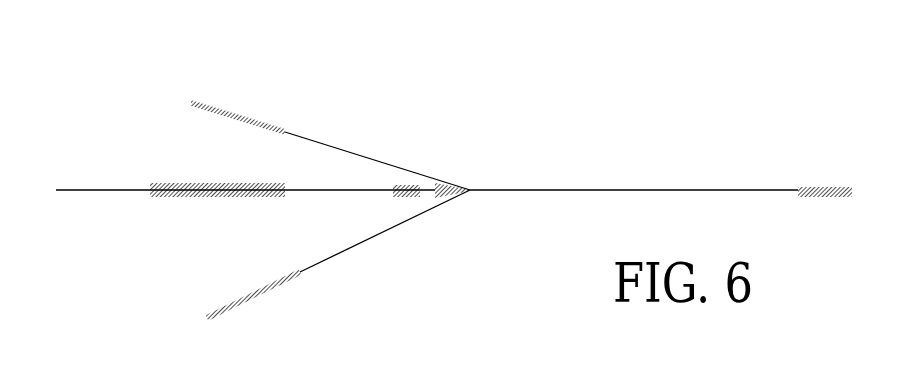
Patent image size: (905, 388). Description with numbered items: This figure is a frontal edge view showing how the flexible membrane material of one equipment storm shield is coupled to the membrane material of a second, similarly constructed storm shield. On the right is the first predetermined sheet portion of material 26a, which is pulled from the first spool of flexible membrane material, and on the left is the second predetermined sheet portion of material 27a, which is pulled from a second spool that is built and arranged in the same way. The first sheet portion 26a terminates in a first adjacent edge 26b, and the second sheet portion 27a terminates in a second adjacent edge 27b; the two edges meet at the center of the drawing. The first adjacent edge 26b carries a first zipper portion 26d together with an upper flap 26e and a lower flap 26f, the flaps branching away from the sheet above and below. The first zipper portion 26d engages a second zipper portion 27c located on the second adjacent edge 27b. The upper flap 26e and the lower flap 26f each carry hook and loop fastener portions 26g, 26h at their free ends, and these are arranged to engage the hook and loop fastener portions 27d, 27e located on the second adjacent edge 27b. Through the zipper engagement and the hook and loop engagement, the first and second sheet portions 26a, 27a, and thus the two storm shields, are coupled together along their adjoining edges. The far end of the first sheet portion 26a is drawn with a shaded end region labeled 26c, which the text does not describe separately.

The first predetermined sheet portion of material 26a is at (640, 189).
The first adjacent edge 26b is at (476, 188).
The optical fiber end portion 26c is at (823, 187).
The first zipper portion 26d is at (441, 200).
The upper flap 26e is at (320, 143).
The lower flap 26f is at (350, 249).
The hook and loop fastener portion 26g is at (213, 117).
The hook and loop fastener portion 26h is at (247, 292).
The second predetermined sheet portion of material 27a is at (82, 188).
The second adjacent edge 27b is at (335, 190).
The second zipper portion 27c is at (402, 198).
The hook and loop fastener portion 27d is at (188, 181).
The hook and loop fastener portion 27e is at (205, 199).